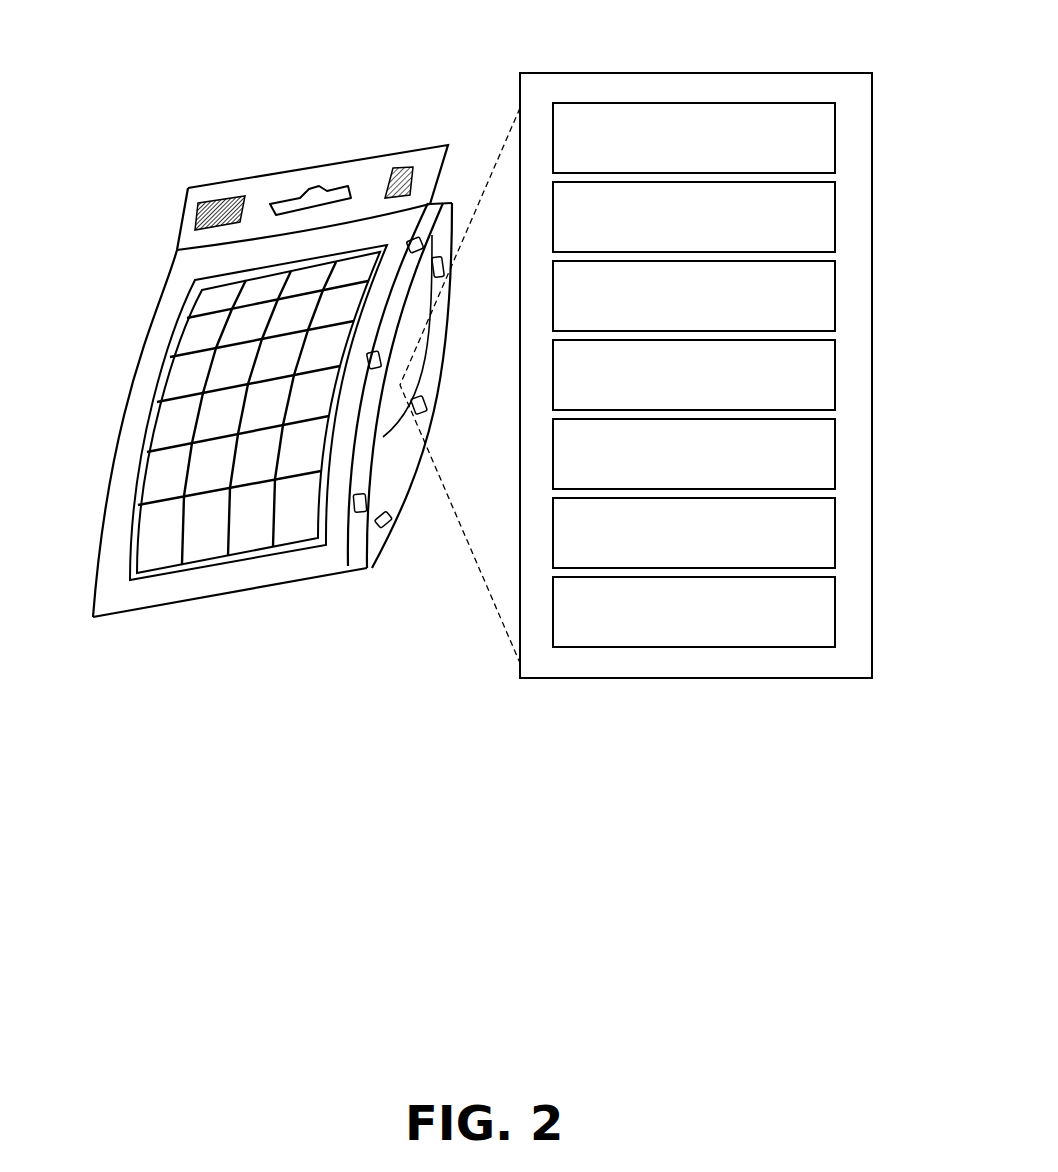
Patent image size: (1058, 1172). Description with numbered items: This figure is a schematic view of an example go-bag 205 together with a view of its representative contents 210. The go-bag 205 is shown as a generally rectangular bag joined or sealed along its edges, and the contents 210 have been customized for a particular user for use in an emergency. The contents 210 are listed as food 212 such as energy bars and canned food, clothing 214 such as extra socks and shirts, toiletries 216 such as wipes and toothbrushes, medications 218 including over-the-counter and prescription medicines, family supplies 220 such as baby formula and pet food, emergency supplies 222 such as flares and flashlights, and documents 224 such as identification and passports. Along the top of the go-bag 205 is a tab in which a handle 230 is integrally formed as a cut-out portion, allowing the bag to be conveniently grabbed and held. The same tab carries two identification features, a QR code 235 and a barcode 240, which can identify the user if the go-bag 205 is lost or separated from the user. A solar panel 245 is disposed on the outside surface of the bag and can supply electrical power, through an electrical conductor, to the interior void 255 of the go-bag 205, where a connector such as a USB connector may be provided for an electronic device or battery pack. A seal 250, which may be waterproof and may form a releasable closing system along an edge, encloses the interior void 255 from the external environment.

The go-bag 205 is at (113, 352).
The contents 210 is at (838, 72).
The food 212 is at (835, 133).
The clothing 214 is at (835, 212).
The toiletries 216 is at (835, 291).
The medications 218 is at (835, 370).
The family supplies 220 is at (835, 449).
The emergency supplies 222 is at (835, 528).
The documents 224 is at (835, 607).
The handle 230 is at (308, 186).
The QR code 235 is at (388, 170).
The barcode 240 is at (233, 200).
The solar panel 245 is at (207, 535).
The seal 250 is at (360, 530).
The interior void 255 is at (383, 437).